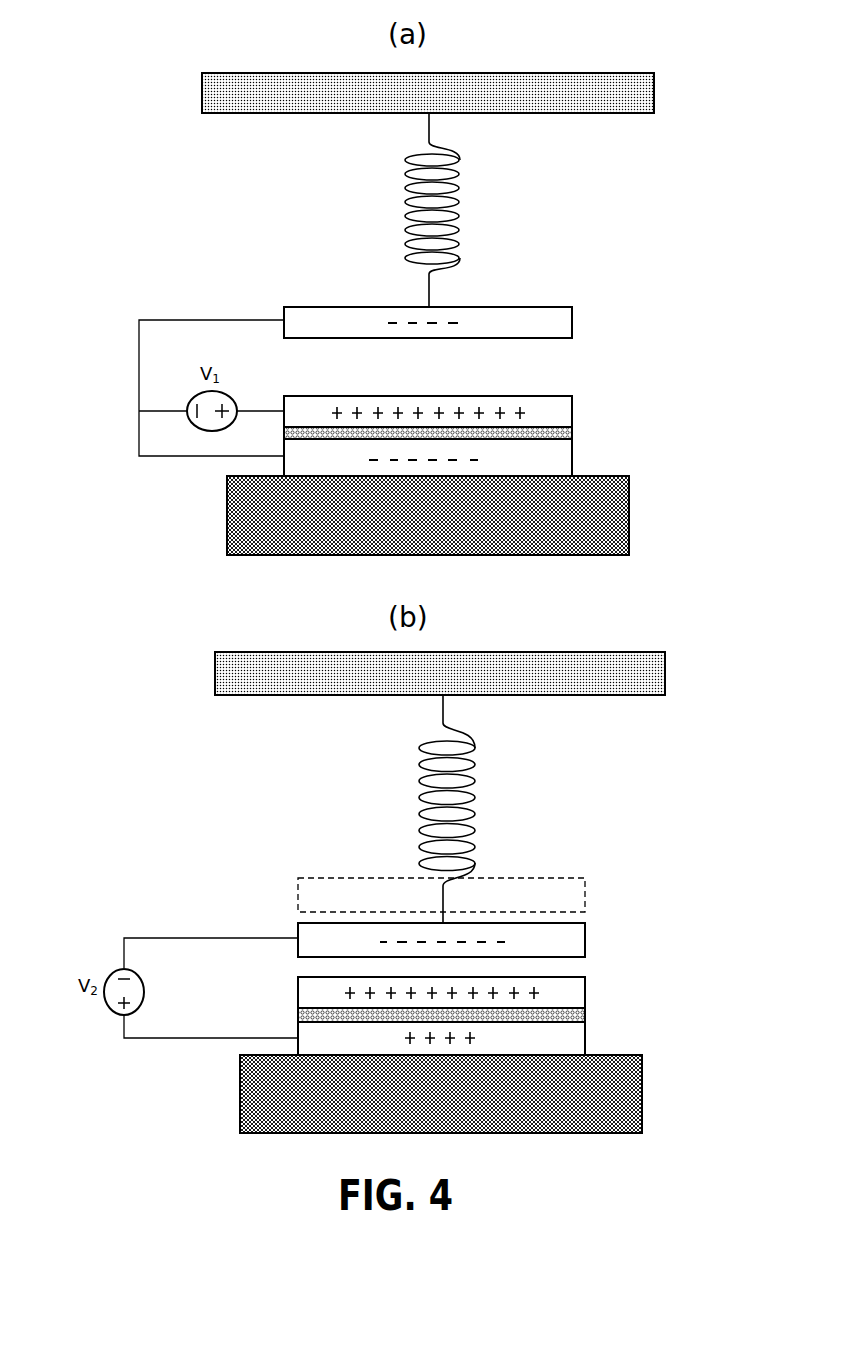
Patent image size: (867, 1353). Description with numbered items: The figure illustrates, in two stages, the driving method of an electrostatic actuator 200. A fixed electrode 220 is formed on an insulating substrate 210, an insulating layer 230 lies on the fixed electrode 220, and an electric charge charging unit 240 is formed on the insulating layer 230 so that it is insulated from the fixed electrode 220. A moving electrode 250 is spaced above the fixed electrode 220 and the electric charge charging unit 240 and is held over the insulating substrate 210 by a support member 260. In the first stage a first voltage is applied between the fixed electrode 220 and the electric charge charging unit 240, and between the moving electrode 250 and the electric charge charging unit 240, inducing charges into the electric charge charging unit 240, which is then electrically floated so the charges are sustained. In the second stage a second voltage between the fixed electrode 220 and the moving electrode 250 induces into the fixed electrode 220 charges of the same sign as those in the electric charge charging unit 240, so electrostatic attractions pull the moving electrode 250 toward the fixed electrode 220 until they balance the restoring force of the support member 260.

The electrostatic actuator 200 is at (78, 103).
The insulating substrate 210 is at (629, 508).
The fixed electrode 220 is at (543, 458).
The insulating layer 230 is at (556, 432).
The electric charge charging unit 240 is at (530, 405).
The moving electrode 250 is at (327, 318).
The support member 260 is at (453, 208).